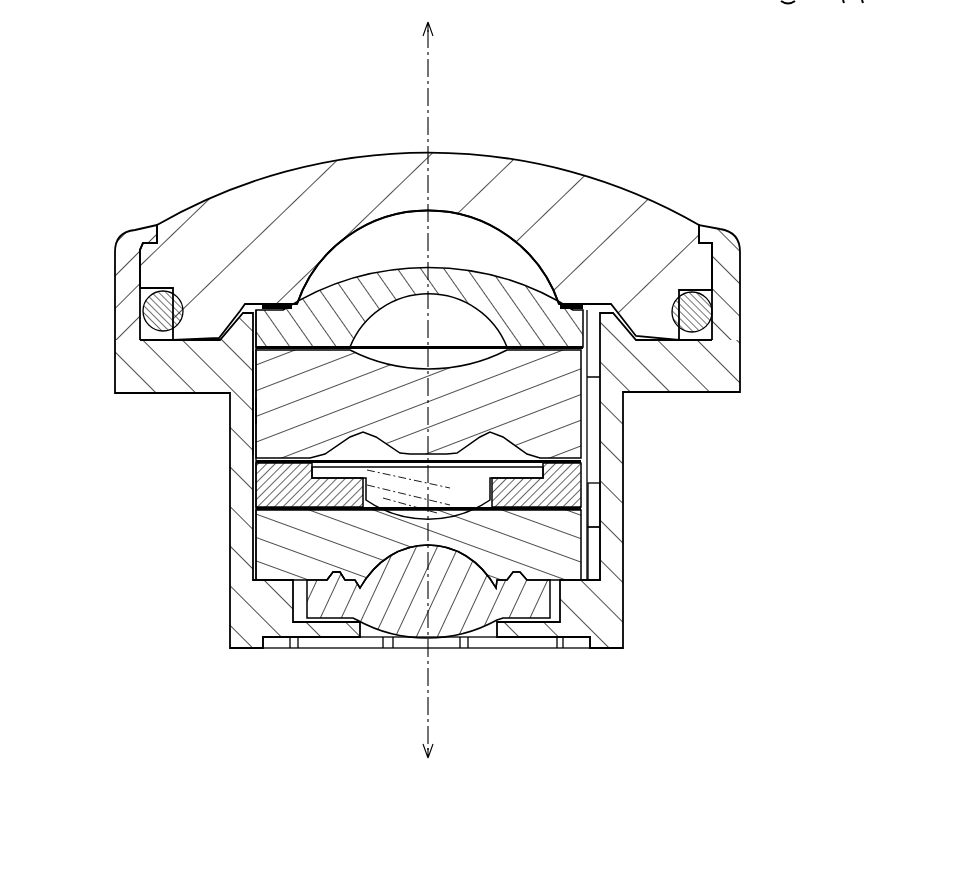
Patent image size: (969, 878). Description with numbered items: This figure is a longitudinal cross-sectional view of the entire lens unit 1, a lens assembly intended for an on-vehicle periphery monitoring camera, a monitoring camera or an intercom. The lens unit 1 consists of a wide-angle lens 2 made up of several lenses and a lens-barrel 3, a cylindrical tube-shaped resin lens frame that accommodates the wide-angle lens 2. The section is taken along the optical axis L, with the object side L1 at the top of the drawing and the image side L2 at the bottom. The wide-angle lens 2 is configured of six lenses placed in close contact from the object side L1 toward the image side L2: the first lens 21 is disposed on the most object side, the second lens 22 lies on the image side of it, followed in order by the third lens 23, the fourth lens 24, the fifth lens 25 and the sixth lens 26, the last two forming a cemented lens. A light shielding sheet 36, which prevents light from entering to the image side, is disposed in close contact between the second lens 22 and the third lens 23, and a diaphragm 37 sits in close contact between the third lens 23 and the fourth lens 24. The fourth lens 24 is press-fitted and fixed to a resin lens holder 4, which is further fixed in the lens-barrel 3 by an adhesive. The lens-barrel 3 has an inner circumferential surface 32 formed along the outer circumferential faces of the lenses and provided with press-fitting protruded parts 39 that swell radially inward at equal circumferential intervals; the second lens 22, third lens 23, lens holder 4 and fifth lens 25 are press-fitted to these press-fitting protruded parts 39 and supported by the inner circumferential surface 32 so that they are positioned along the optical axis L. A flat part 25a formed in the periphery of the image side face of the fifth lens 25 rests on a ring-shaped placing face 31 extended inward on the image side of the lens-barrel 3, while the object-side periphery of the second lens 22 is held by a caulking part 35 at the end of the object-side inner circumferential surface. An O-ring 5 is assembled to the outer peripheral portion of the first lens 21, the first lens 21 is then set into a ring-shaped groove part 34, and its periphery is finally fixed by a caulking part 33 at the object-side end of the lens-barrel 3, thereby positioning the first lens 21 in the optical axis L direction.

The lens unit 1 is at (52, 53).
The wide-angle lens 2 is at (665, 43).
The first lens 21 is at (438, 167).
The second lens 22 is at (443, 283).
The third lens 23 is at (458, 392).
The fourth lens 24 is at (463, 480).
The fifth lens 25 is at (473, 550).
The flat part 25a is at (287, 582).
The sixth lens 26 is at (480, 583).
The lens-barrel 3 is at (232, 643).
The ring-shaped placing face 31 is at (250, 548).
The inner circumferential surface 32 is at (303, 328).
The caulking part 33 is at (130, 232).
The ring-shaped groove part 34 is at (147, 355).
The caulking part 35 is at (256, 306).
The light shielding sheet 36 is at (257, 412).
The diaphragm 37 is at (590, 487).
The press-fitting protruded parts 39 is at (257, 427).
The lens holder 4 is at (257, 494).
The O-ring 5 is at (143, 312).
The optical axis L is at (428, 718).
The object side L1 is at (428, 18).
The image side L2 is at (428, 775).